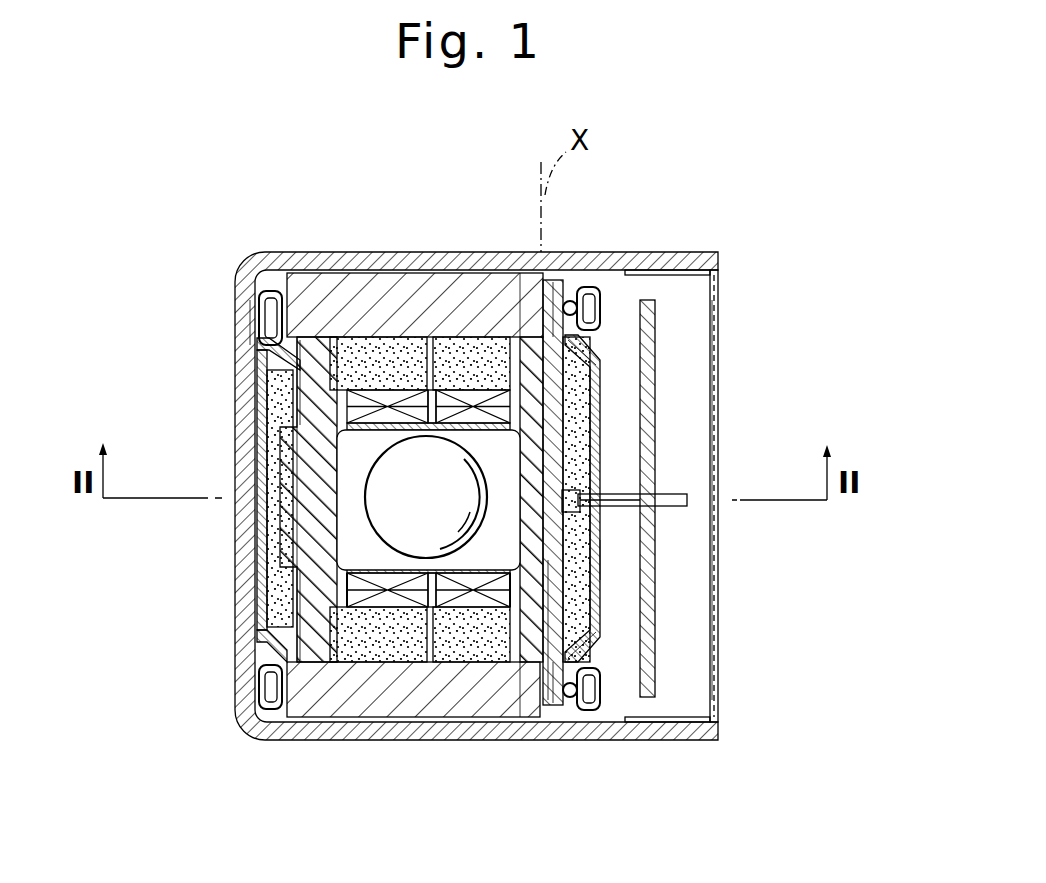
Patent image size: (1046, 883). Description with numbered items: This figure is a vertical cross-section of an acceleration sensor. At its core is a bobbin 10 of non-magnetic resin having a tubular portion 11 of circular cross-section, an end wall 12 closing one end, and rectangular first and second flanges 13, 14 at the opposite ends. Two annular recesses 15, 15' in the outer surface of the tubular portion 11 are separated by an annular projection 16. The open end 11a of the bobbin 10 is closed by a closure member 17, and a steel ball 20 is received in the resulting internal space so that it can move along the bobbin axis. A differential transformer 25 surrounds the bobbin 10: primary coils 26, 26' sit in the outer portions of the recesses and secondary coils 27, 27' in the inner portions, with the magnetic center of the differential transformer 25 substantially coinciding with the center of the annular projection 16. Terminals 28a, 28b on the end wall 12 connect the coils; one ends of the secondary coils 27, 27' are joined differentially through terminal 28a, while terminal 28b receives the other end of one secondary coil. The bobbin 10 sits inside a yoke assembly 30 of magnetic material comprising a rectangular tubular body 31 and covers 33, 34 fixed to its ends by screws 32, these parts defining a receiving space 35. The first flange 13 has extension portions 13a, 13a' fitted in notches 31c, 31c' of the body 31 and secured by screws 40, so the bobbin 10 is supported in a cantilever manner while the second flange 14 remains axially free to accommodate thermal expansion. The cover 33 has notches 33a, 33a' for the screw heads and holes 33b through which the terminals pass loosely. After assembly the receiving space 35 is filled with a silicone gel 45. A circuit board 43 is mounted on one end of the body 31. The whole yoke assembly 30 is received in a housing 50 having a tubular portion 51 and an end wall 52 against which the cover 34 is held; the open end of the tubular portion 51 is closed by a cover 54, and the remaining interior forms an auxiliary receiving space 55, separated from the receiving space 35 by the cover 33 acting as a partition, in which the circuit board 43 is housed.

The bobbin 10 is at (340, 368).
The tubular portion 11 is at (568, 455).
The open end 11a is at (306, 560).
The end wall 12 is at (553, 584).
The first flange 13 is at (556, 386).
The extension portion 13a is at (574, 266).
The extension portion 13a' is at (574, 723).
The second flange 14 is at (300, 362).
The annular recess 15 is at (387, 313).
The annular recess 15' is at (473, 313).
The annular projection 16 is at (429, 404).
The closure member 17 is at (293, 527).
The steel ball 20 is at (378, 488).
The differential transformer 25 is at (396, 620).
The primary coil 26 is at (461, 679).
The primary coil 26' is at (384, 679).
The secondary coil 27 is at (323, 679).
The secondary coil 27' is at (485, 679).
The terminal 28a is at (582, 494).
The terminal 28b is at (680, 508).
The yoke assembly 30 is at (260, 345).
The body 31 is at (318, 287).
The notch 31c is at (503, 252).
The notch 31c' is at (522, 723).
The screw 32 is at (258, 300).
The cover 33 is at (599, 422).
The notch 33a is at (677, 324).
The notch 33a' is at (680, 644).
The hole 33b is at (599, 560).
The cover 34 is at (272, 432).
The receiving space 35 is at (397, 347).
The screw 40 is at (578, 300).
The circuit board 43 is at (653, 612).
The silicone gel 45 is at (447, 352).
The housing 50 is at (293, 246).
The tubular portion 51 is at (712, 272).
The end wall 52 is at (252, 325).
The cover 54 is at (713, 386).
The auxiliary receiving space 55 is at (686, 364).